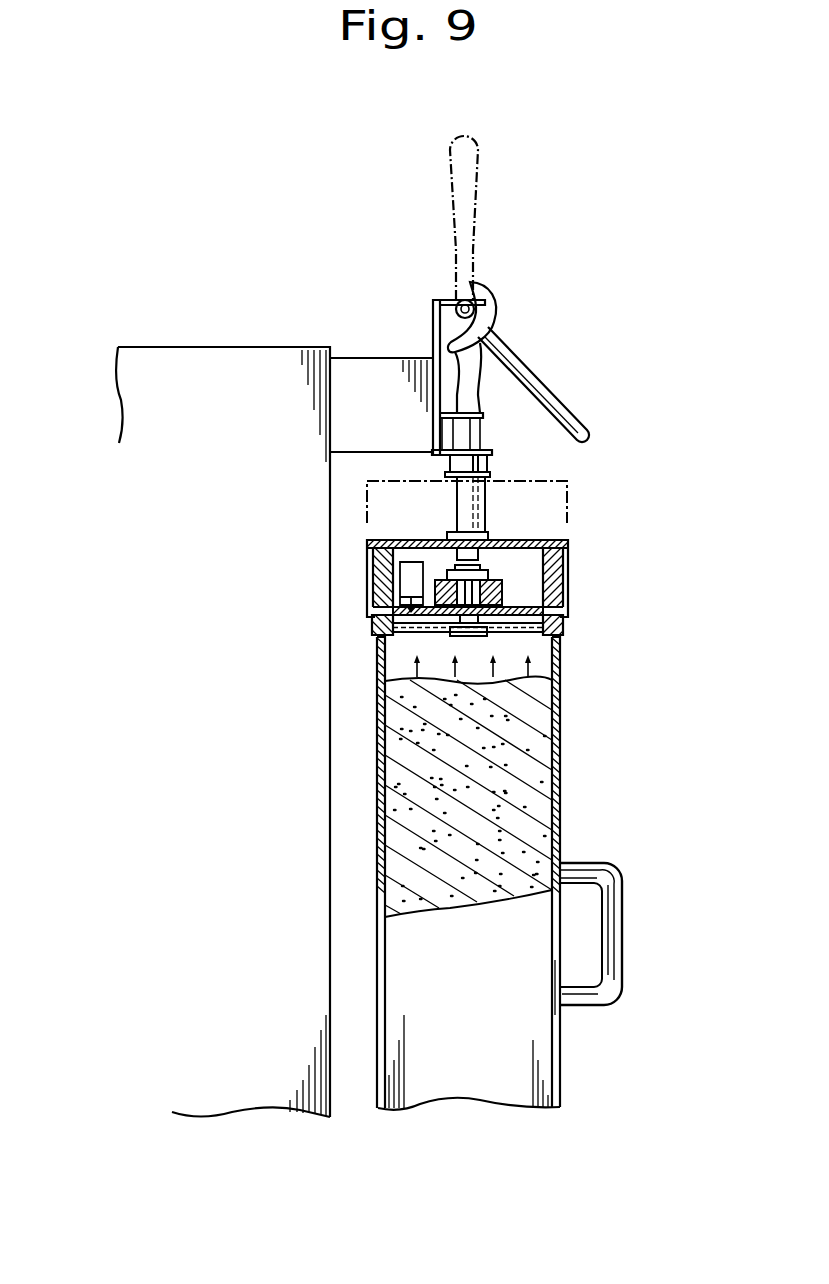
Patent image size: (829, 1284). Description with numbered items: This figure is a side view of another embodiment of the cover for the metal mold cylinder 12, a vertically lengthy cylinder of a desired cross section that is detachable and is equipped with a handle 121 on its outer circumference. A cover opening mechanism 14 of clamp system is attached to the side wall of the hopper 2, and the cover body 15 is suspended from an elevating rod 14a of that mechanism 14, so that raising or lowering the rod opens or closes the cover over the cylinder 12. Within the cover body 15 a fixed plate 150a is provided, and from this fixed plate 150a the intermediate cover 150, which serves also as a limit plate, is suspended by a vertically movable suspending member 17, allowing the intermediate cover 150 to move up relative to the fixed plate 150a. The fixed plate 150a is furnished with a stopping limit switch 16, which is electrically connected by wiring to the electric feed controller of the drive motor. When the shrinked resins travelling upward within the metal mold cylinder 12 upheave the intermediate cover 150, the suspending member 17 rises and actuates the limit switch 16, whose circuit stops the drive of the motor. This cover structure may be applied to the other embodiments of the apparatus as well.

The hopper 2 is at (173, 363).
The cover opening mechanism 14 is at (478, 432).
The elevating rod 14a is at (470, 505).
The cover body 15 is at (500, 529).
The stopping limit switch 16 is at (393, 580).
The intermediate cover 150 is at (507, 637).
The fixed plate 150a is at (523, 606).
The suspending member 17 is at (497, 614).
The metal mold cylinder 12 is at (542, 1042).
The handle 121 is at (612, 907).